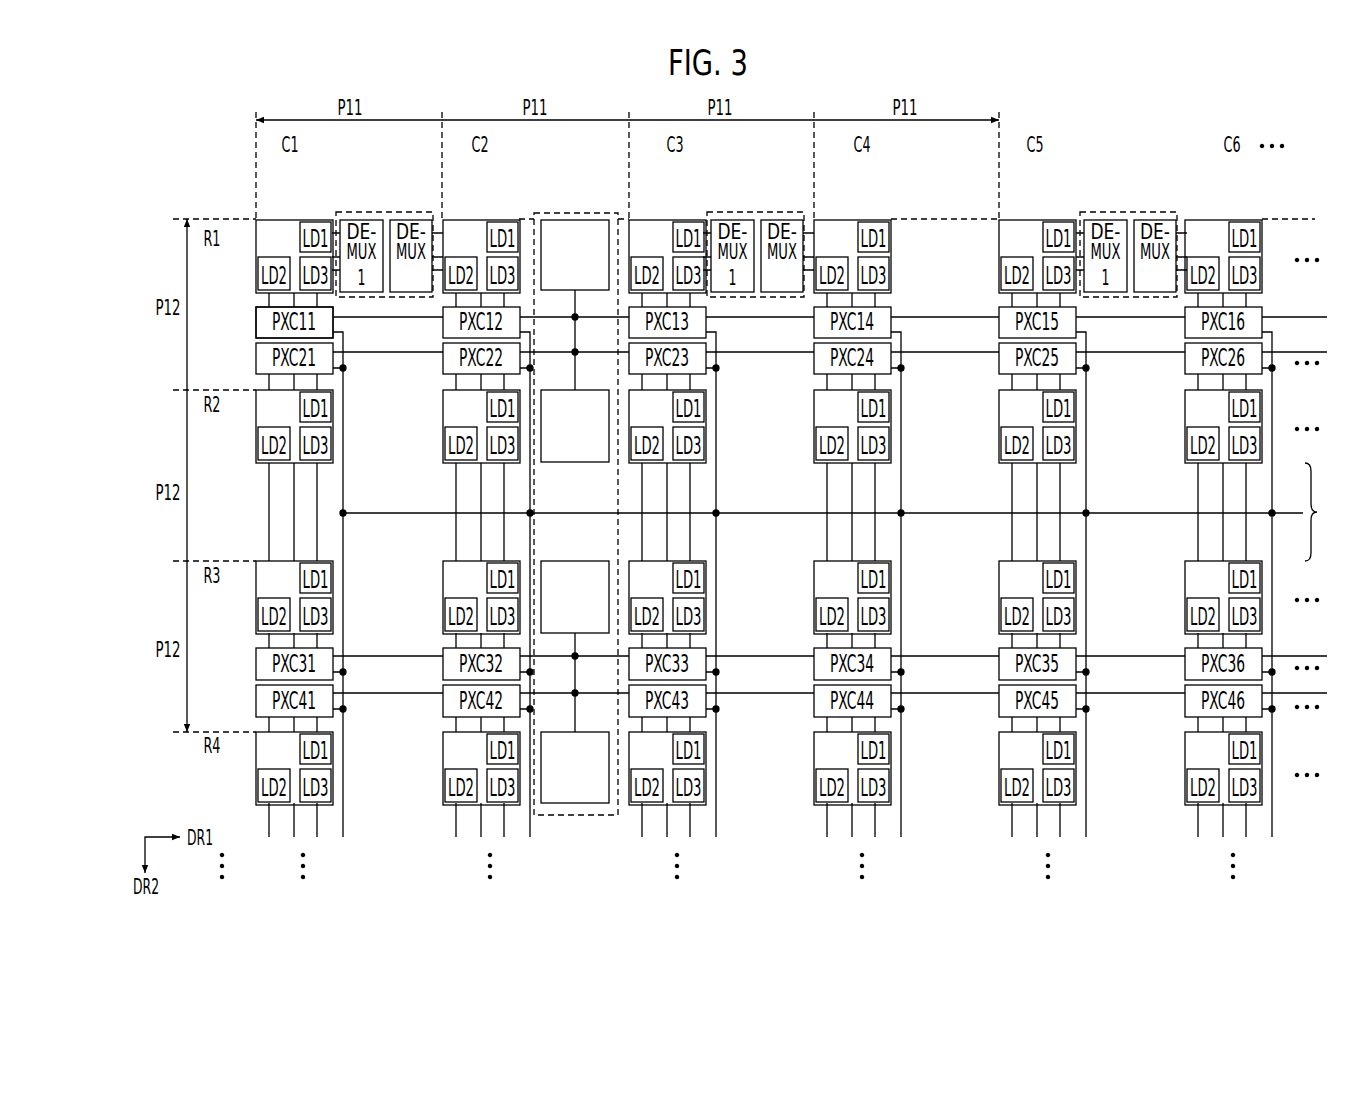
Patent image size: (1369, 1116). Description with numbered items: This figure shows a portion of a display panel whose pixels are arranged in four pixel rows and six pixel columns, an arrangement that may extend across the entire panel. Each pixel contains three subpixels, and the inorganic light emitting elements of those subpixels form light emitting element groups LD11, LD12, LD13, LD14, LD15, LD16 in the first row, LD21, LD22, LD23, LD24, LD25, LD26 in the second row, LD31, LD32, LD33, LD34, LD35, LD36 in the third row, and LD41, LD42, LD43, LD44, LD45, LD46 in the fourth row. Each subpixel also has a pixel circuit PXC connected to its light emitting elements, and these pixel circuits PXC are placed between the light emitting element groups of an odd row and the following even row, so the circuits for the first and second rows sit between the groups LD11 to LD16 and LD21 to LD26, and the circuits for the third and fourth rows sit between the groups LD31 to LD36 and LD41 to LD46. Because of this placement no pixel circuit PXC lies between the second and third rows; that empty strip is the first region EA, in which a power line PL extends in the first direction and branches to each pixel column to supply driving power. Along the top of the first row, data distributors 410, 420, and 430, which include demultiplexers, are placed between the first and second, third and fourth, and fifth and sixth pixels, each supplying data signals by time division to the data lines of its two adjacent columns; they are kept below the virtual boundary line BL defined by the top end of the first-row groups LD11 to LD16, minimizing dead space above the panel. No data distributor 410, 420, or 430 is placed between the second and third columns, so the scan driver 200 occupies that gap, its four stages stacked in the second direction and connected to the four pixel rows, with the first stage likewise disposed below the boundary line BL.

The scan driver 200 is at (575, 213).
The data distributor 410 is at (392, 212).
The data distributor 420 is at (762, 212).
The data distributor 430 is at (1128, 211).
The pixel circuit PXC is at (257, 318).
The virtual boundary line BL is at (756, 221).
The power line PL is at (823, 501).
The first region EA is at (1322, 512).
The light emitting element group LD11 is at (318, 219).
The light emitting element group LD12 is at (505, 219).
The light emitting element group LD13 is at (691, 219).
The light emitting element group LD14 is at (876, 219).
The light emitting element group LD15 is at (1061, 219).
The light emitting element group LD16 is at (1247, 219).
The light emitting element group LD21 is at (258, 444).
The light emitting element group LD22 is at (443, 419).
The light emitting element group LD23 is at (706, 423).
The light emitting element group LD24 is at (814, 455).
The light emitting element group LD25 is at (1076, 410).
The light emitting element group LD26 is at (1185, 440).
The light emitting element group LD31 is at (258, 615).
The light emitting element group LD32 is at (443, 590).
The light emitting element group LD33 is at (706, 594).
The light emitting element group LD34 is at (814, 624).
The light emitting element group LD35 is at (1076, 581).
The light emitting element group LD36 is at (1185, 610).
The light emitting element group LD41 is at (258, 786).
The light emitting element group LD42 is at (443, 785).
The light emitting element group LD43 is at (706, 765).
The light emitting element group LD44 is at (814, 795).
The light emitting element group LD45 is at (1076, 751).
The light emitting element group LD46 is at (1185, 782).